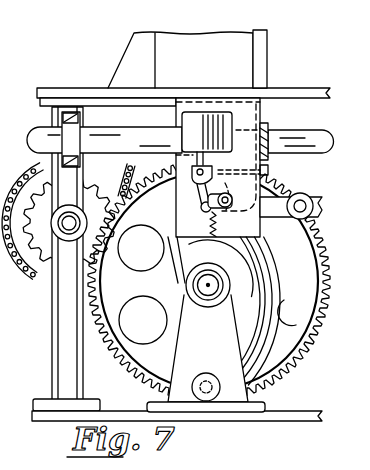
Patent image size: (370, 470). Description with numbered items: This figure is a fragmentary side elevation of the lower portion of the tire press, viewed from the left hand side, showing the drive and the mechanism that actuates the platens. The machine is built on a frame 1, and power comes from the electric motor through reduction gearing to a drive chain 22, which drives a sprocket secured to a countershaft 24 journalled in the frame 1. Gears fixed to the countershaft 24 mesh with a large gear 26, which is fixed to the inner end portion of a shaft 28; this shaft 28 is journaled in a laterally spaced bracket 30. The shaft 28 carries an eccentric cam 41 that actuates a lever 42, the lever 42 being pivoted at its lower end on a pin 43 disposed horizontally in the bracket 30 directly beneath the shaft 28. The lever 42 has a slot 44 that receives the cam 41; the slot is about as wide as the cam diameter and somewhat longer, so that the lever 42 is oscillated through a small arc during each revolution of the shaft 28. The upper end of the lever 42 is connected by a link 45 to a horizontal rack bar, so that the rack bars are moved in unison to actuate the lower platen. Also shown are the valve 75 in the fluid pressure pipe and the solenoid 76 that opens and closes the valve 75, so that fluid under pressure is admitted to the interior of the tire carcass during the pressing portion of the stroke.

The frame 1 is at (51, 343).
The drive chain 22 is at (55, 185).
The countershaft 24 is at (66, 225).
The large gear 26 is at (291, 368).
The shaft 28 is at (206, 290).
The bracket 30 is at (223, 362).
The eccentric cam 41 is at (240, 302).
The lever 42 is at (279, 291).
The pin 43 is at (207, 404).
The slot 44 is at (198, 254).
The link 45 is at (282, 199).
The valve 75 is at (262, 118).
The solenoid 76 is at (180, 120).